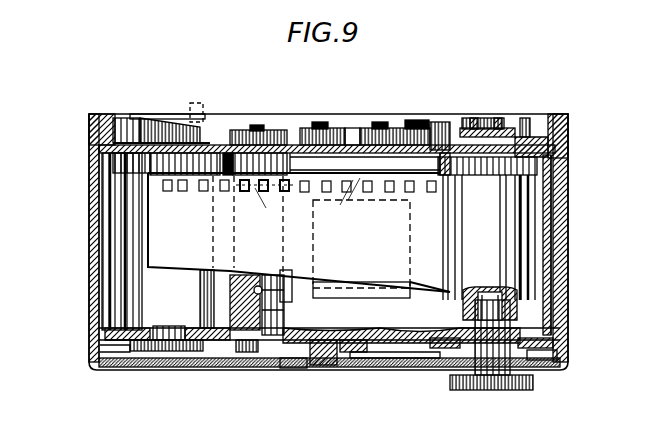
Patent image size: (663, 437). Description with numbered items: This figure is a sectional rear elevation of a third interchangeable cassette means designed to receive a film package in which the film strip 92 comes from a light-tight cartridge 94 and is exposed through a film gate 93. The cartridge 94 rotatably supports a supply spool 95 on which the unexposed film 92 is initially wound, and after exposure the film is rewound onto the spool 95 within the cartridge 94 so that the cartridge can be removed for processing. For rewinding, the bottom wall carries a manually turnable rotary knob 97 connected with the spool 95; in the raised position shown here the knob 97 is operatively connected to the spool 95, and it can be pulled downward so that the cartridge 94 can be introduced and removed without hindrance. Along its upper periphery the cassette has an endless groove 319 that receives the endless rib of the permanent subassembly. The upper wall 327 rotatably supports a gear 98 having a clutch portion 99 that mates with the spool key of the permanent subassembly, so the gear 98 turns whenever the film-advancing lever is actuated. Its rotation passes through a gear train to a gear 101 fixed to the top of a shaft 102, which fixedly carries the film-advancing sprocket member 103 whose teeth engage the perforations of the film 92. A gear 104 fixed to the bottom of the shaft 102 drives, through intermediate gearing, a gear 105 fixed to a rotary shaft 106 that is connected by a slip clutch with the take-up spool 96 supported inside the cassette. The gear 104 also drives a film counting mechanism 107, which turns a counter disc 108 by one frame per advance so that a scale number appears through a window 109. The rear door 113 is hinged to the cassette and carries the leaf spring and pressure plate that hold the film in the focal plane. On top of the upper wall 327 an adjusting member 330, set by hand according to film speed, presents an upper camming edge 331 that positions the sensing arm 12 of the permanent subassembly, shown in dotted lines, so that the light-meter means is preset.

The sensing arm 12 is at (205, 104).
The film strip 92 is at (427, 280).
The film gate 93 is at (350, 290).
The light-tight cartridge 94 is at (535, 235).
The supply spool 95 is at (498, 290).
The take-up spool 96 is at (135, 285).
The rotary knob 97 is at (503, 392).
The gear 98 is at (535, 118).
The clutch portion 99 is at (480, 118).
The gear 101 is at (283, 145).
The shaft 102 is at (237, 352).
The film-advancing sprocket member 103 is at (285, 290).
The gear 104 is at (280, 352).
The gear 105 is at (145, 352).
The rotary shaft 106 is at (178, 334).
The film counting mechanism 107 is at (315, 376).
The counter disc 108 is at (338, 366).
The window 109 is at (365, 360).
The rear door 113 is at (89, 210).
The endless groove 319 is at (570, 118).
The upper wall 327 is at (223, 147).
The adjusting member 330 is at (131, 104).
The camming edge 331 is at (168, 114).